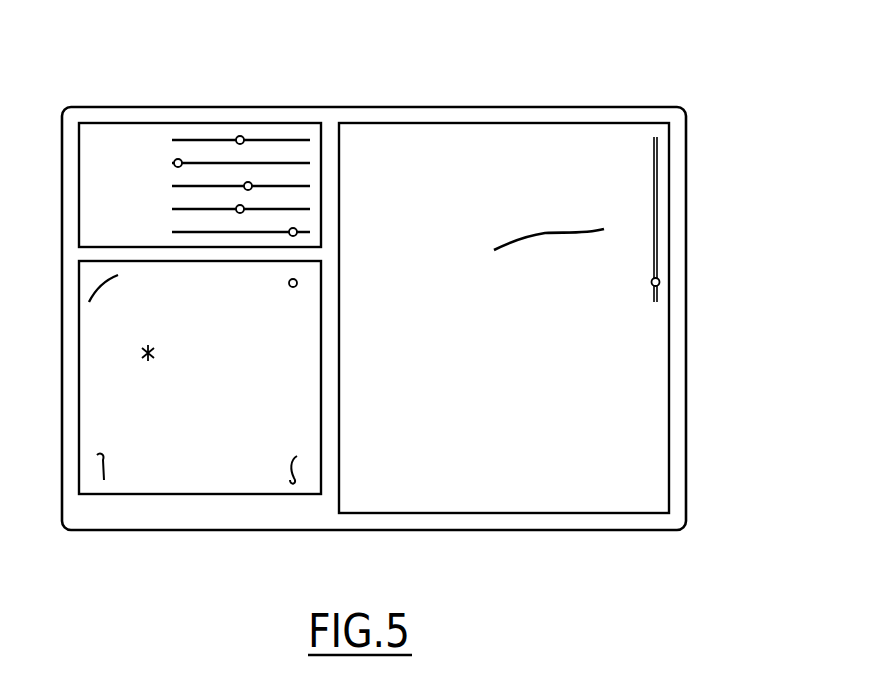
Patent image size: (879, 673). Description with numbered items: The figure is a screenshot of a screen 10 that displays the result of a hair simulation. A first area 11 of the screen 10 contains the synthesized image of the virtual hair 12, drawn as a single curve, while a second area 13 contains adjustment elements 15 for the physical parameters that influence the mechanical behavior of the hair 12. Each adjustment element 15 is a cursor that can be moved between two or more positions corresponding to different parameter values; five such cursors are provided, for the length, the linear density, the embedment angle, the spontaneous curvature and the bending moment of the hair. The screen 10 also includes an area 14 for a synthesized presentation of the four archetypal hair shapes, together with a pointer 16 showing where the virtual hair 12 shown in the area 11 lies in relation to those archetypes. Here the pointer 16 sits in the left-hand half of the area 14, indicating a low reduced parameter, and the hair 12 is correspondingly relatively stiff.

The screen 10 is at (684, 104).
The first area 11 is at (670, 398).
The hair 12 is at (537, 240).
The second area 13 is at (213, 130).
The area 14 is at (193, 495).
The adjustment element 15 is at (243, 137).
The pointer 16 is at (155, 352).